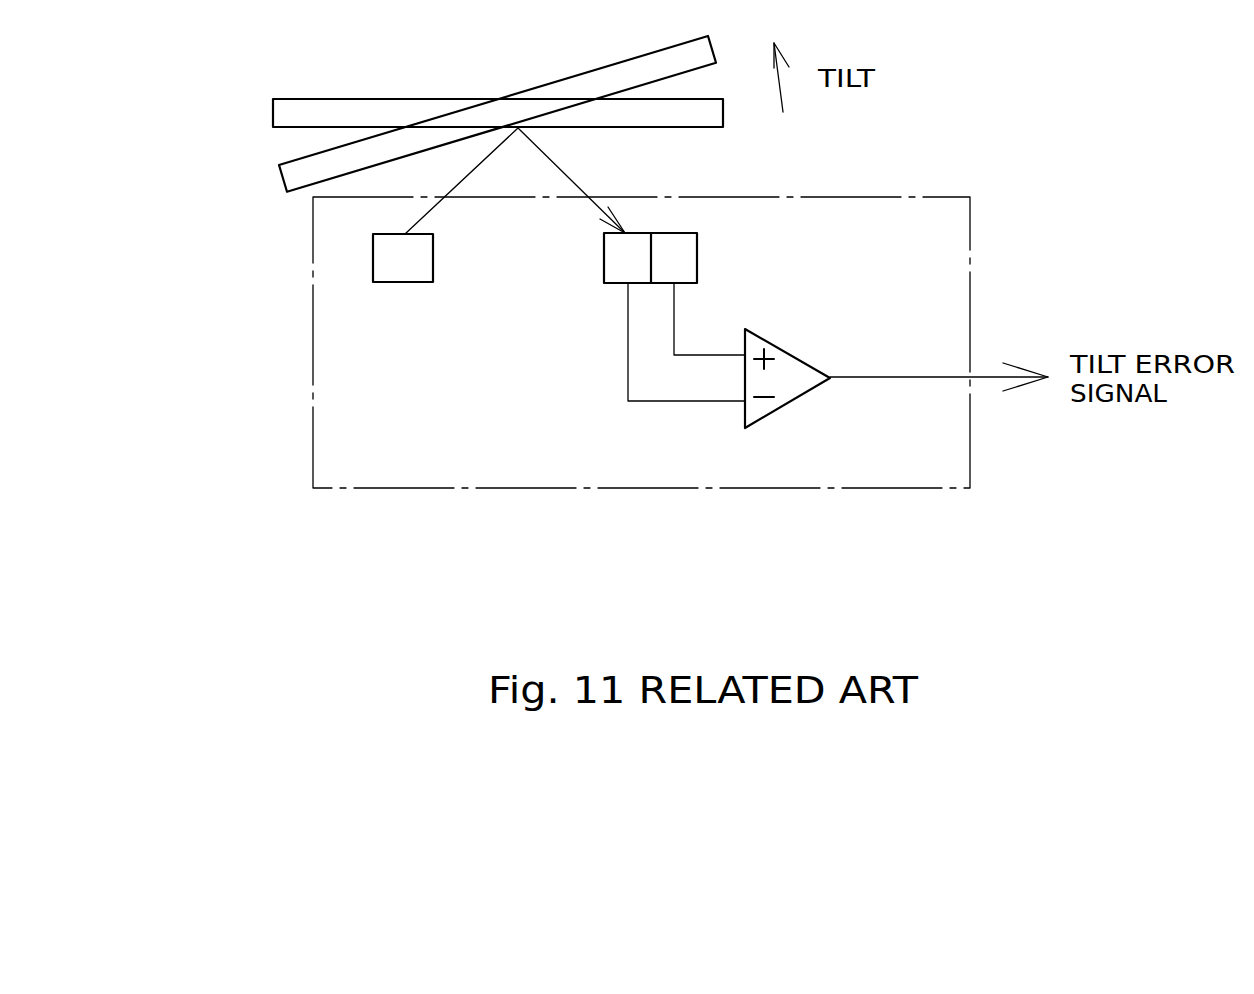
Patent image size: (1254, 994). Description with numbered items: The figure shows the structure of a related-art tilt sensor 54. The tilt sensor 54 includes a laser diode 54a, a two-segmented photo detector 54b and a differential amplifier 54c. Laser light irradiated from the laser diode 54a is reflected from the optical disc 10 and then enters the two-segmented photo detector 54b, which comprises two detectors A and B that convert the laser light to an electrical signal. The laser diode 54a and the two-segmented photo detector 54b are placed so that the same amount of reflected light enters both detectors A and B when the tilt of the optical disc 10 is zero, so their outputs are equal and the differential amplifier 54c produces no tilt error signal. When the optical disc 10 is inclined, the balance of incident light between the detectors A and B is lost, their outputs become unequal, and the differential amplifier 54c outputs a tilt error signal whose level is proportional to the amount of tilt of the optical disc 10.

The optical disc 10 is at (273, 116).
The tilt sensor 54 is at (663, 488).
The laser diode (LD) 54a is at (403, 282).
The two-segmented photo detector 54b is at (697, 255).
The differential amplifier 54c is at (770, 340).